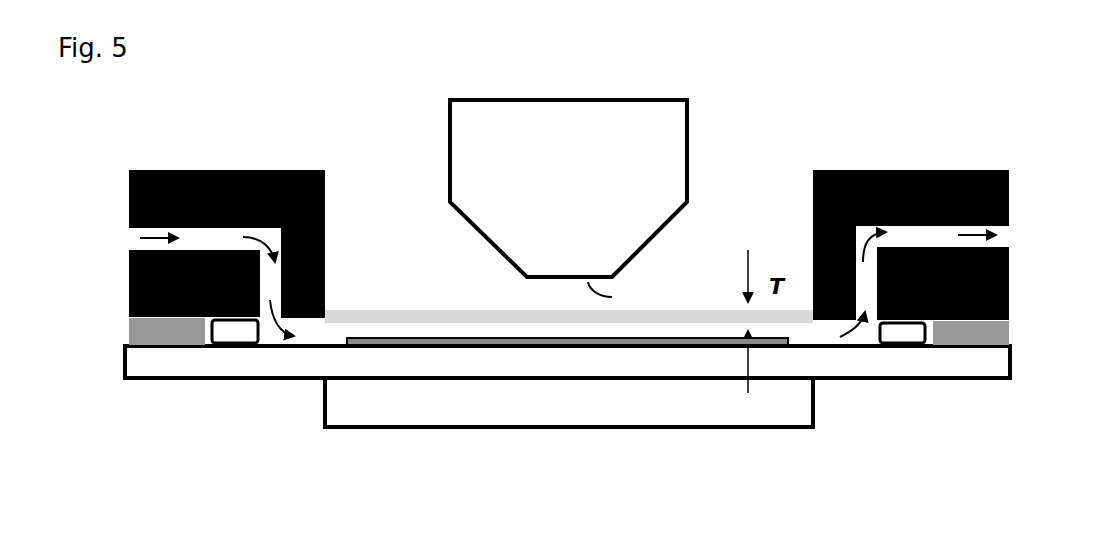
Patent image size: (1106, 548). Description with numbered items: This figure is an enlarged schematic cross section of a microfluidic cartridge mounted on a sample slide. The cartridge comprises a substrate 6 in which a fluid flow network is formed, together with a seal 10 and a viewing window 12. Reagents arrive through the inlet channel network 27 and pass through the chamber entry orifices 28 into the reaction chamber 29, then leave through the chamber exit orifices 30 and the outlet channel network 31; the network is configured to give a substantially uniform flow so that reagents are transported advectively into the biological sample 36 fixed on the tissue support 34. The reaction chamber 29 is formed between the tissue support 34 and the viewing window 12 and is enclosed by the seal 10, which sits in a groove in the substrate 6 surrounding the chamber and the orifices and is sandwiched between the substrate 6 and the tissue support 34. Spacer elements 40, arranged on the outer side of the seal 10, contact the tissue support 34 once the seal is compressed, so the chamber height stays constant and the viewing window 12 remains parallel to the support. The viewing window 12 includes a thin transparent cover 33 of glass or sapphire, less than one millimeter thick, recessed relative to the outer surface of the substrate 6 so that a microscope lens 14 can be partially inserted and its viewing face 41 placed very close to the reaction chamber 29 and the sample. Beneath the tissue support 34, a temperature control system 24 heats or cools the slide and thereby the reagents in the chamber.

The substrate 6 is at (129, 193).
The viewing window 12 is at (325, 257).
The inlet channel network 27 is at (135, 241).
The chamber entry orifices 28 is at (268, 297).
The chamber exit orifices 30 is at (868, 297).
The outlet channel network 31 is at (980, 240).
The lens 14 is at (648, 147).
The viewing face 41 is at (615, 297).
The transparent cover 33 is at (428, 316).
The reaction chamber 29 is at (476, 330).
The biological sample 36 is at (540, 343).
The tissue support 34 is at (602, 363).
The temperature control system 24 is at (715, 413).
The spacer elements 40 is at (153, 337).
The seal 10 is at (232, 337).